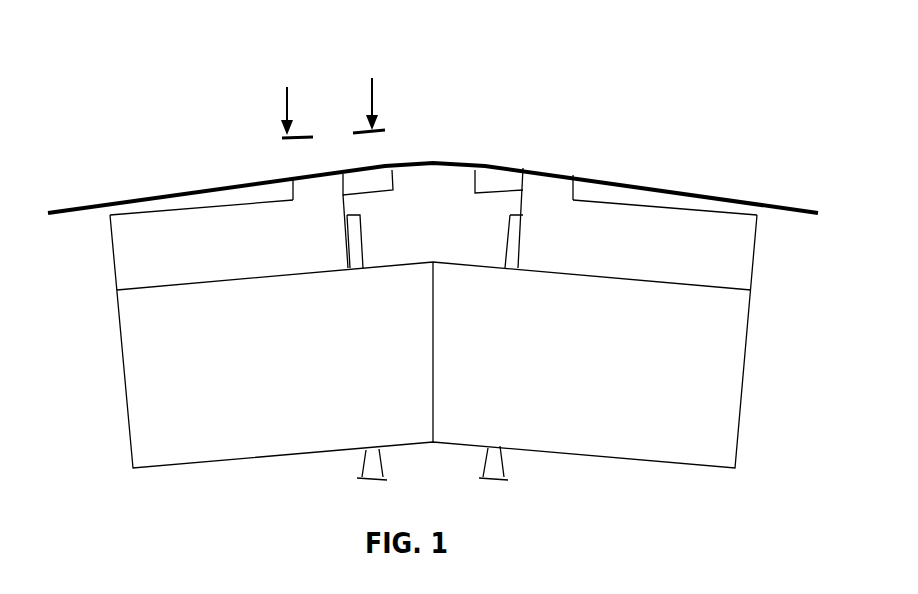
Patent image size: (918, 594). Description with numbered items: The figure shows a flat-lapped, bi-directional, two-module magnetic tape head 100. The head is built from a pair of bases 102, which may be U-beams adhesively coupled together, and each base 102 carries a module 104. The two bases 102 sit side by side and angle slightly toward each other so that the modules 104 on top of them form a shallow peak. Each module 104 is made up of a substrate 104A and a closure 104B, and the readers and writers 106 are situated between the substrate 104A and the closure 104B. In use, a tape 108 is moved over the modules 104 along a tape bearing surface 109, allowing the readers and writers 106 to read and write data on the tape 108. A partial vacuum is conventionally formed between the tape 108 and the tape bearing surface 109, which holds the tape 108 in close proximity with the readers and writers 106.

The magnetic tape head 100 is at (216, 131).
The base 102 is at (123, 357).
The module 104 is at (114, 262).
The substrate 104A is at (173, 235).
The closure 104B is at (475, 182).
The readers and writers 106 is at (527, 155).
The tape 108 is at (752, 203).
The tape bearing surface 109 is at (305, 164).